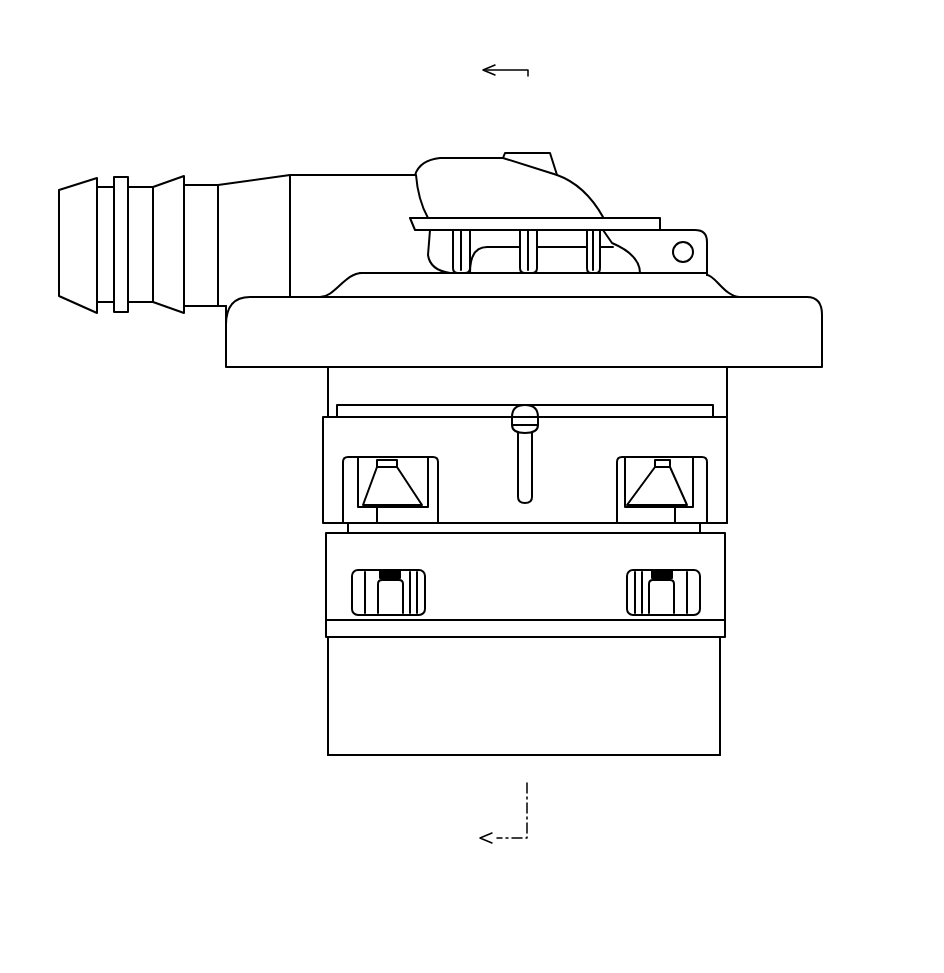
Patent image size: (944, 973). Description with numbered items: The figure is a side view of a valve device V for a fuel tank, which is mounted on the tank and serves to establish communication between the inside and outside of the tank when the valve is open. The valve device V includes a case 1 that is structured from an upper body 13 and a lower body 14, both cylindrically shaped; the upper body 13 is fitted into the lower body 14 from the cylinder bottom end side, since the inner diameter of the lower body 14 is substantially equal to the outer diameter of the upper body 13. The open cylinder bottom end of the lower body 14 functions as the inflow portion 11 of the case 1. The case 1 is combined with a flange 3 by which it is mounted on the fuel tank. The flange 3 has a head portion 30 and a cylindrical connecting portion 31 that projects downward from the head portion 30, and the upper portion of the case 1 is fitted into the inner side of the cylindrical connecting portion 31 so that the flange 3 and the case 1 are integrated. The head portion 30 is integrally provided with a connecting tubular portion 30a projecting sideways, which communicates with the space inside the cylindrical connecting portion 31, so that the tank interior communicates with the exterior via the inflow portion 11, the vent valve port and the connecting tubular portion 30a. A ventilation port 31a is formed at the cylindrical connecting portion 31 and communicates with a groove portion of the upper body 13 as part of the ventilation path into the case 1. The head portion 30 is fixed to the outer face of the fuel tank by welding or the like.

The valve device V is at (568, 120).
The connecting tubular portion 30a is at (200, 192).
The flange 3 is at (773, 312).
The head portion 30 is at (524, 332).
The cylindrical connecting portion 31 is at (663, 388).
The ventilation port 31a is at (542, 423).
The upper body 13 is at (400, 523).
The case 1 is at (715, 598).
The lower body 14 is at (352, 692).
The inflow portion 11 is at (640, 755).